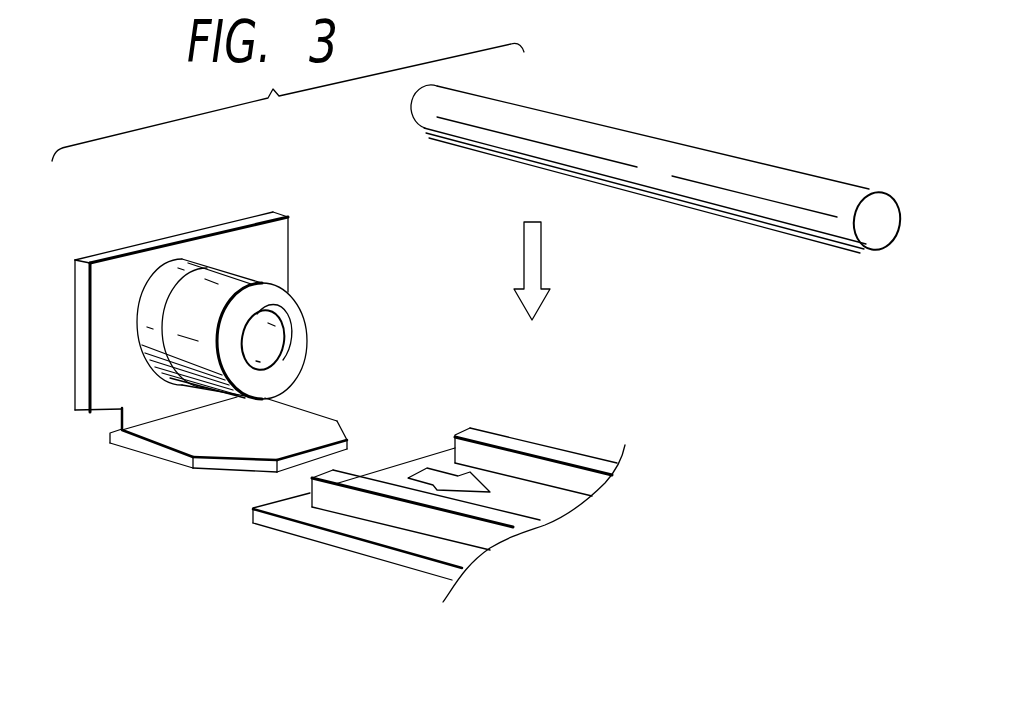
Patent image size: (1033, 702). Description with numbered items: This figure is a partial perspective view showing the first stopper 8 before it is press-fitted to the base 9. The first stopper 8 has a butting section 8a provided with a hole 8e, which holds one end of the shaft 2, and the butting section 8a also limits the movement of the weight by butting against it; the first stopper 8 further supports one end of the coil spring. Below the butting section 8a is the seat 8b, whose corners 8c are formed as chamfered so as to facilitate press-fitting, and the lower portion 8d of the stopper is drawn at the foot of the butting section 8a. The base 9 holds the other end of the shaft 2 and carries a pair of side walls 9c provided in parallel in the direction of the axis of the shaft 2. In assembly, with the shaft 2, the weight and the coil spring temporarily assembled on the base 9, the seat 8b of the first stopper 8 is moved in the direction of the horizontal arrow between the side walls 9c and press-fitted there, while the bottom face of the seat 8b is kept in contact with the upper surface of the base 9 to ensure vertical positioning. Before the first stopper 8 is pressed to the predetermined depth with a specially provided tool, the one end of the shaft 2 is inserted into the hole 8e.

The shaft 2 is at (417, 112).
The first stopper 8 is at (277, 213).
The butting section 8a is at (252, 277).
The seat 8b is at (186, 437).
The corners 8c is at (337, 421).
The lower end 8d is at (85, 413).
The hole 8e is at (278, 328).
The base 9 is at (255, 525).
The side walls 9c is at (347, 475).